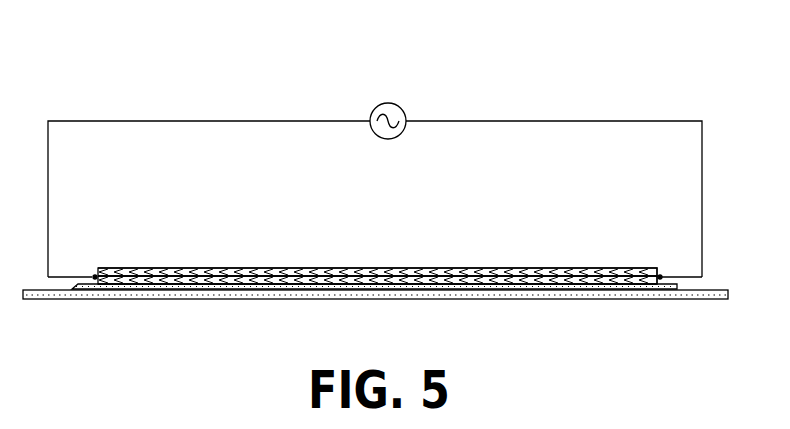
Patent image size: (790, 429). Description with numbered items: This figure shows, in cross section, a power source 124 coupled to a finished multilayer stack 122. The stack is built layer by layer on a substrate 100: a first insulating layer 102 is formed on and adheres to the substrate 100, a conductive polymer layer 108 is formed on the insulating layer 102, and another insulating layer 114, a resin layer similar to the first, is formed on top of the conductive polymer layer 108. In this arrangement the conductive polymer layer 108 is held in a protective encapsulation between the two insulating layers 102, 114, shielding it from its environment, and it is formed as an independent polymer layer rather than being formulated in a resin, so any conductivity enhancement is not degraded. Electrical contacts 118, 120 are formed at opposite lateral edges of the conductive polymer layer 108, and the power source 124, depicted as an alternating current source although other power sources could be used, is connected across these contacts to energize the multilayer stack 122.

The substrate 100 is at (715, 300).
The insulating layer 102 is at (393, 268).
The conductive polymer layer 108 is at (576, 276).
The insulating layer 114 is at (530, 275).
The electrical contact 118 is at (92, 277).
The electrical contact 120 is at (681, 259).
The multilayer stack 122 is at (614, 249).
The power source 124 is at (398, 98).